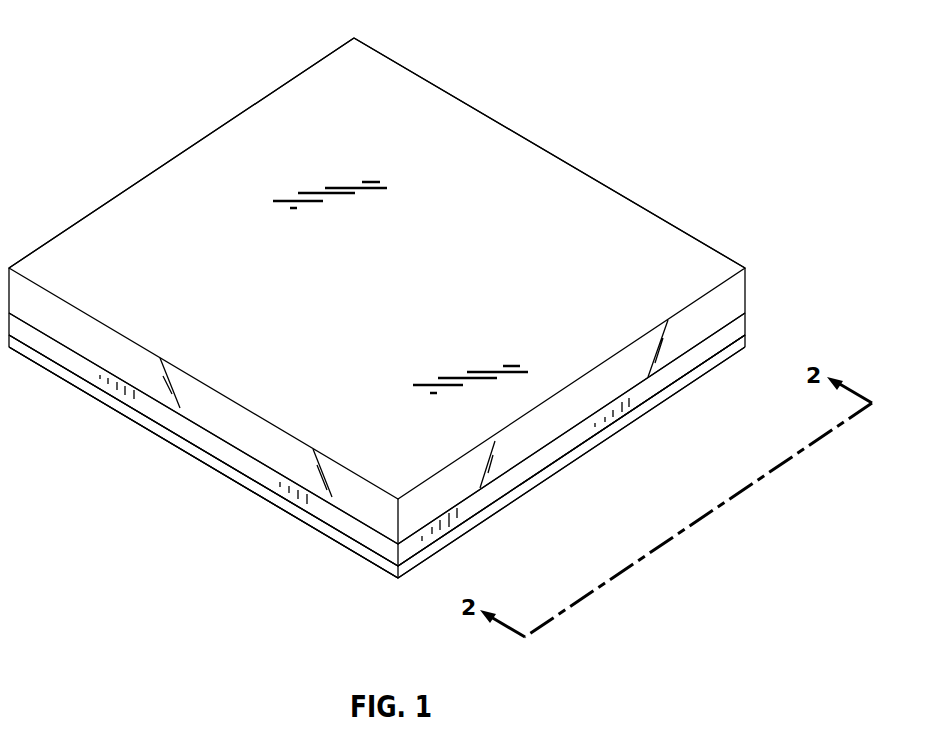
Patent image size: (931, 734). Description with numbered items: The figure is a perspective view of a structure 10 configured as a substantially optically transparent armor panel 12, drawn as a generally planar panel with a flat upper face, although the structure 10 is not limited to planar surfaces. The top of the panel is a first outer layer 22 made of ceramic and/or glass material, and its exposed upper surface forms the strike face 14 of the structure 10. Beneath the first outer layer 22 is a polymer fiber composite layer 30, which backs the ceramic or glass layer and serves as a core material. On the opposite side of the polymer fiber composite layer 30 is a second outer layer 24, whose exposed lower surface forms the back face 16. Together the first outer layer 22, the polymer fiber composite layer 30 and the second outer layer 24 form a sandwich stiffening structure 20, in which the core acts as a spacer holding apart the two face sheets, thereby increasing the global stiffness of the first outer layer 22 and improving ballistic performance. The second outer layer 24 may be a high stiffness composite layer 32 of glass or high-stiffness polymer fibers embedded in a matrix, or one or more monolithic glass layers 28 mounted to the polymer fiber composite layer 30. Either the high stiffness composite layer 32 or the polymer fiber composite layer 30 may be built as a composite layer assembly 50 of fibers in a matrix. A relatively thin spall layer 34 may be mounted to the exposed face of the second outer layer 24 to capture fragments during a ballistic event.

The structure 10 is at (120, 192).
The substantially optically transparent armor panel 12 is at (185, 170).
The strike face 14 is at (437, 107).
The back face 16 is at (632, 422).
The stiffening structure 20 is at (760, 265).
The first outer layer 22 is at (737, 288).
The second outer layer 24 is at (698, 378).
The glass layer 28 is at (520, 485).
The polymer fiber composite layer 30 is at (732, 333).
The high stiffness composite layer 32 is at (562, 460).
The spall layer 34 is at (278, 505).
The composite layer assembly 50 is at (353, 528).